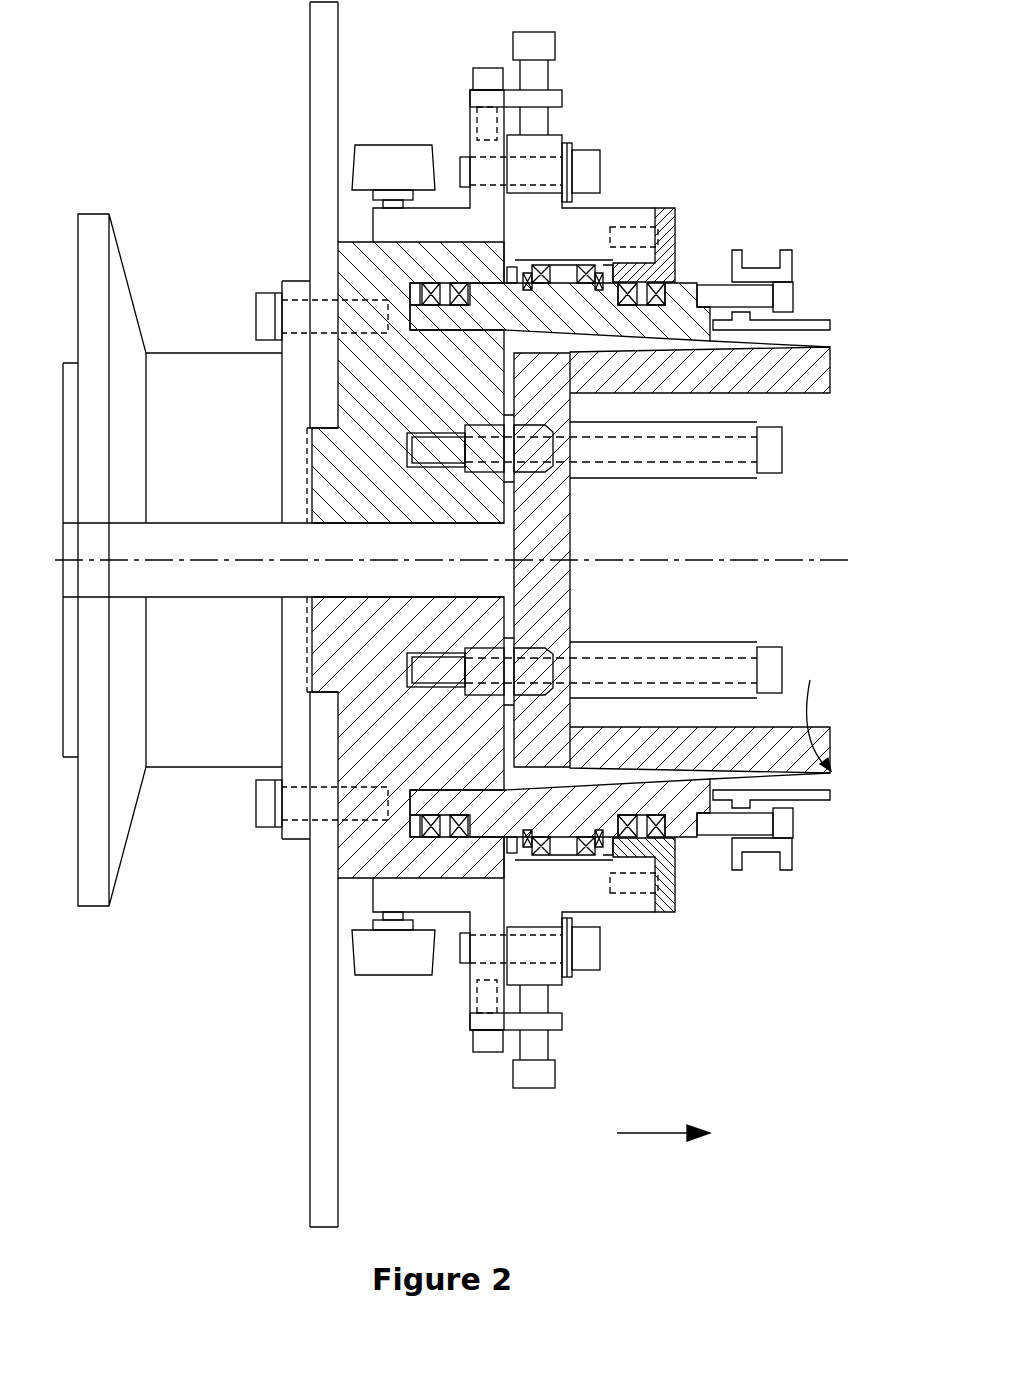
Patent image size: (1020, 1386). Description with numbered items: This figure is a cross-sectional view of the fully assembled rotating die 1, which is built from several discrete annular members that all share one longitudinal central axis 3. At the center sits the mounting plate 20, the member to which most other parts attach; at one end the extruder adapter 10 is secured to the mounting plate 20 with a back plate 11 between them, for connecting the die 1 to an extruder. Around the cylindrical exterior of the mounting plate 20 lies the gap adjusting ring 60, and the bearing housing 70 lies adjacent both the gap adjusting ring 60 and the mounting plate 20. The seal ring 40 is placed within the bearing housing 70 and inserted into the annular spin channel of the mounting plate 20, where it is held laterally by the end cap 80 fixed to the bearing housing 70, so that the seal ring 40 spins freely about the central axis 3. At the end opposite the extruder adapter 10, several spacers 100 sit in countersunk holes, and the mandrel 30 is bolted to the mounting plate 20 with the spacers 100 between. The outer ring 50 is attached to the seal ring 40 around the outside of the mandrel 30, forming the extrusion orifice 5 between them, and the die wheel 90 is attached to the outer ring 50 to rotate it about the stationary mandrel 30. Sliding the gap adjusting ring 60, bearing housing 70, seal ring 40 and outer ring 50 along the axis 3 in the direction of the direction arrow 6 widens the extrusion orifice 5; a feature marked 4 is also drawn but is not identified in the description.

The die 1 is at (233, 100).
The longitudinal central axis 3 is at (745, 557).
The axial gap 4 is at (510, 745).
The extrusion orifice 5 is at (818, 709).
The direction arrow 6 is at (663, 1151).
The extruder adapter 10 is at (120, 307).
The back plate 11 is at (320, 1055).
The mounting plate 20 is at (358, 848).
The mandrel 30 is at (757, 750).
The seal ring 40 is at (670, 313).
The outer ring 50 is at (813, 330).
The gap adjusting ring 60 is at (473, 143).
The bearing housing 70 is at (578, 223).
The end cap 80 is at (665, 260).
The die wheel 90 is at (728, 872).
The spacers 100 is at (560, 670).